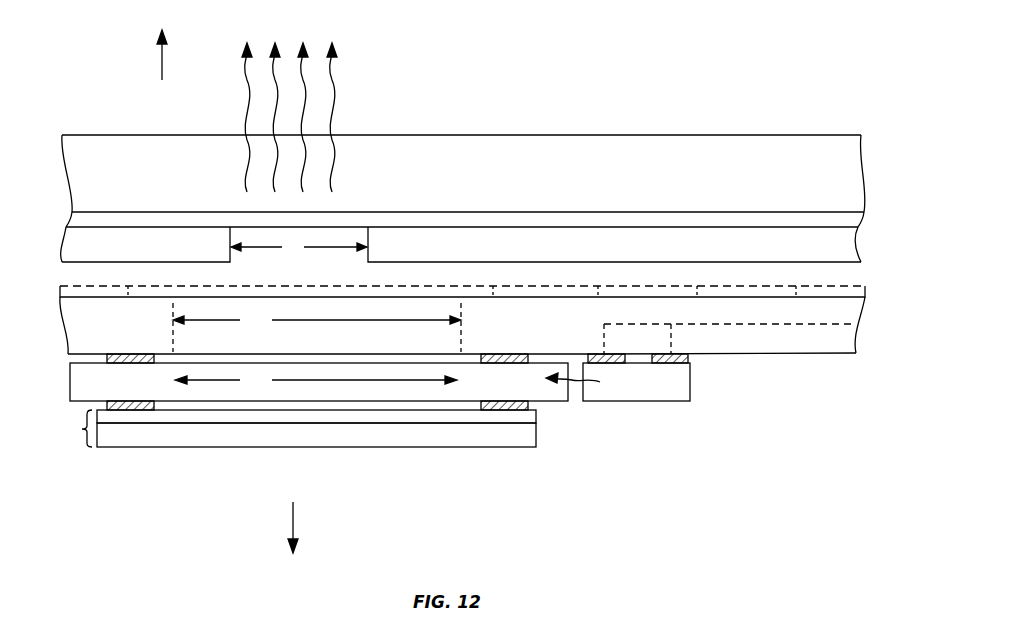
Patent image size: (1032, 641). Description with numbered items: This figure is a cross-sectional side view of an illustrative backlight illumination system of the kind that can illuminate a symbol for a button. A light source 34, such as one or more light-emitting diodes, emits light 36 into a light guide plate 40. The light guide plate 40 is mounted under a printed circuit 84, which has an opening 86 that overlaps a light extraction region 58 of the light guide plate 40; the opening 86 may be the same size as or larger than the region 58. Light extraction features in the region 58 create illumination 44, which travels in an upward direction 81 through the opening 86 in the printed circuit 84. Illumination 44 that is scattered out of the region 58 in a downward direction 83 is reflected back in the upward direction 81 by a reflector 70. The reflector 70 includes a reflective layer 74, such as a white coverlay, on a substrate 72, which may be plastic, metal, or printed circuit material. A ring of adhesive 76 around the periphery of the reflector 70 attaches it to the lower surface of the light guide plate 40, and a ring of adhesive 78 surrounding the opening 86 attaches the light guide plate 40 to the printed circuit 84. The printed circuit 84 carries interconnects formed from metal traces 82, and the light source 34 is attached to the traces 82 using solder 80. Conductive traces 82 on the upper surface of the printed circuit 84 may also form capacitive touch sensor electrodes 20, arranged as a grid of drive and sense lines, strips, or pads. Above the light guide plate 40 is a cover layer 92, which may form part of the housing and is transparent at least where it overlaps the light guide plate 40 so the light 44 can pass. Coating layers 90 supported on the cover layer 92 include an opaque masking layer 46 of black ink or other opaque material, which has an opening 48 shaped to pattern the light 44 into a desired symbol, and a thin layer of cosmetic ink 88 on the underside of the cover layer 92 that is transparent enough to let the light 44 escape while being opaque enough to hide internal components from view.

The capacitive touch sensor electrodes 20 is at (492, 335).
The light source 34 is at (615, 390).
The light 36 is at (575, 382).
The light guide plate 40 is at (548, 388).
The illumination 44 is at (336, 70).
The opaque masking layer 46 is at (66, 243).
The opening 48 is at (299, 247).
The light extraction region 58 is at (316, 380).
The reflector 70 is at (82, 429).
The substrate 72 is at (150, 435).
The reflective layer 74 is at (200, 418).
The adhesive 76 is at (105, 406).
The adhesive 78 is at (105, 358).
The solder 80 is at (620, 364).
The upward direction 81 is at (163, 53).
The metal traces 82 is at (604, 324).
The downward direction 83 is at (295, 512).
The printed circuit 84 is at (792, 342).
The opening 86 is at (317, 327).
The cosmetic ink 88 is at (66, 216).
The coating layers 90 is at (474, 198).
The cover layer 92 is at (68, 160).